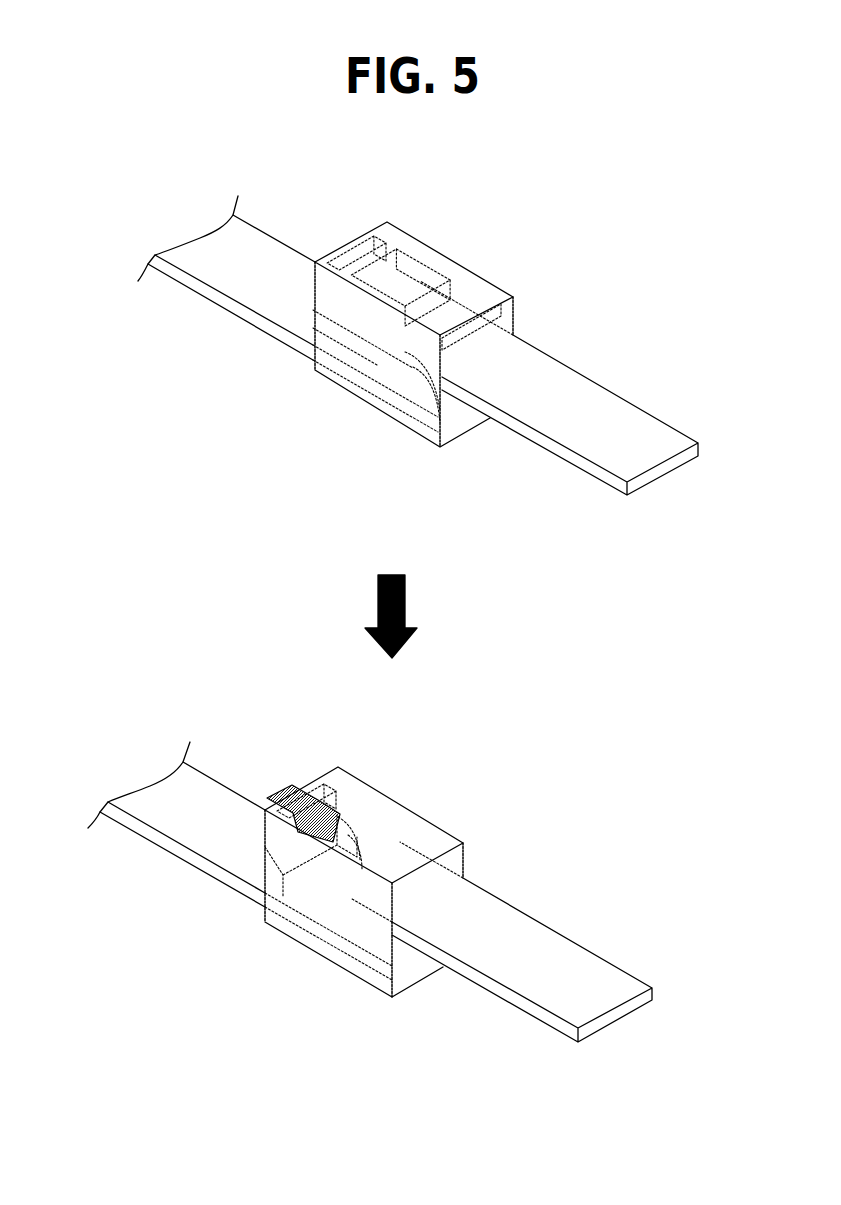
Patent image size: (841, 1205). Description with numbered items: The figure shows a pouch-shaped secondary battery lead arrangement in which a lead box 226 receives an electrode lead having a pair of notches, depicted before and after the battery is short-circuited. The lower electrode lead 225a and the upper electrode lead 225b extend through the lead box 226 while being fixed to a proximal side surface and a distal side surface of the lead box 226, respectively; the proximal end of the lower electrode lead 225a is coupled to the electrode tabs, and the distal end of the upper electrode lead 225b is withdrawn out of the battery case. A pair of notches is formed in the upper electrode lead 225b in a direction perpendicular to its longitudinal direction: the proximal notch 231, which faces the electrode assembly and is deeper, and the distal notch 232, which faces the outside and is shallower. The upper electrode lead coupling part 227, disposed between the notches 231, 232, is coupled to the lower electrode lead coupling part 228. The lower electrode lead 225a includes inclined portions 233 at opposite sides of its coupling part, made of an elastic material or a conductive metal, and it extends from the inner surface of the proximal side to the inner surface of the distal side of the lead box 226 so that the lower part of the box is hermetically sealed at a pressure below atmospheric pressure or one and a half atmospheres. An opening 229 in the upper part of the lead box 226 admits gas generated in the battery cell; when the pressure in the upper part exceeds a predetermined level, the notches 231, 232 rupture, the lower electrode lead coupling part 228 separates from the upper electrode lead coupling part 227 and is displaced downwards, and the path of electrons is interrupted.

The lower electrode lead 225a is at (258, 290).
The upper electrode lead 225b is at (620, 407).
The lead box 226 is at (458, 446).
The upper electrode lead coupling part 227 is at (433, 300).
The lower electrode lead coupling part 228 is at (371, 373).
The opening 229 is at (354, 245).
The proximal notch 231 is at (408, 279).
The distal notch 232 is at (468, 328).
The inclined portion 233 is at (322, 358).